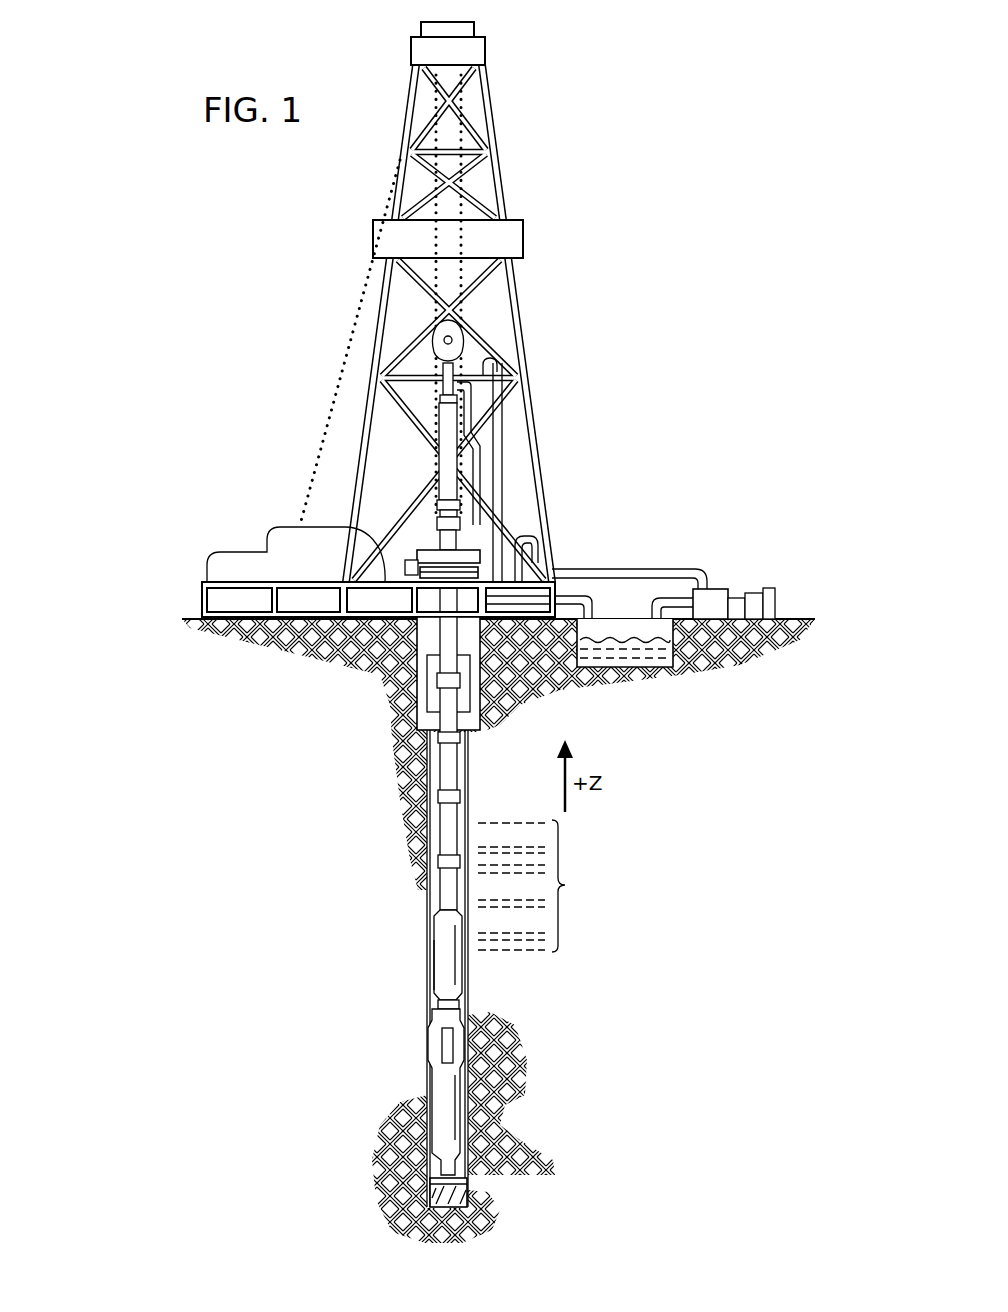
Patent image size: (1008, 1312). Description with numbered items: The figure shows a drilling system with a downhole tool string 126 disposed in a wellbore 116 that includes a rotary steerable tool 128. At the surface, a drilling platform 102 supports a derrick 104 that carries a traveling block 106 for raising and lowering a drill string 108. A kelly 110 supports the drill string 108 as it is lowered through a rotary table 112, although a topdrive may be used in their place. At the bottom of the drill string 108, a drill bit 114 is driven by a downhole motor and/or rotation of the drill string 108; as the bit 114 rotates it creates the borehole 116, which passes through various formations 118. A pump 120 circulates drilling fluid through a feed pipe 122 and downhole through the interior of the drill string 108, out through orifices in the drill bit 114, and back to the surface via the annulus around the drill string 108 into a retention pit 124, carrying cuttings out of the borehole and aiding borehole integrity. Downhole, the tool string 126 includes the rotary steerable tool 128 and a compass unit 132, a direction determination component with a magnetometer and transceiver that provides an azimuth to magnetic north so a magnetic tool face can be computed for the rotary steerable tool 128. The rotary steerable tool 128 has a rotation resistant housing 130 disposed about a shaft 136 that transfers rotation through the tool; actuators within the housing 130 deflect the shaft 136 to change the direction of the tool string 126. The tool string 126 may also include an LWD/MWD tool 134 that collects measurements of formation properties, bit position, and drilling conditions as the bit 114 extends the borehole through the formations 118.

The drilling platform 102 is at (203, 597).
The derrick 104 is at (492, 142).
The traveling block 106 is at (468, 348).
The drill string 108 is at (458, 768).
The kelly 110 is at (438, 413).
The rotary table 112 is at (418, 552).
The drill bit 114 is at (467, 1180).
The wellbore 116 is at (470, 785).
The formations 118 is at (542, 886).
The pump 120 is at (710, 588).
The feed pipe 122 is at (620, 568).
The retention pit 124 is at (603, 642).
The tool string 126 is at (446, 1056).
The rotary steerable tool 128 is at (433, 1072).
The rotation resistant housing 130 is at (458, 505).
The compass unit 132 is at (432, 980).
The LWD/MWD tool 134 is at (434, 938).
The shaft 136 is at (460, 1003).